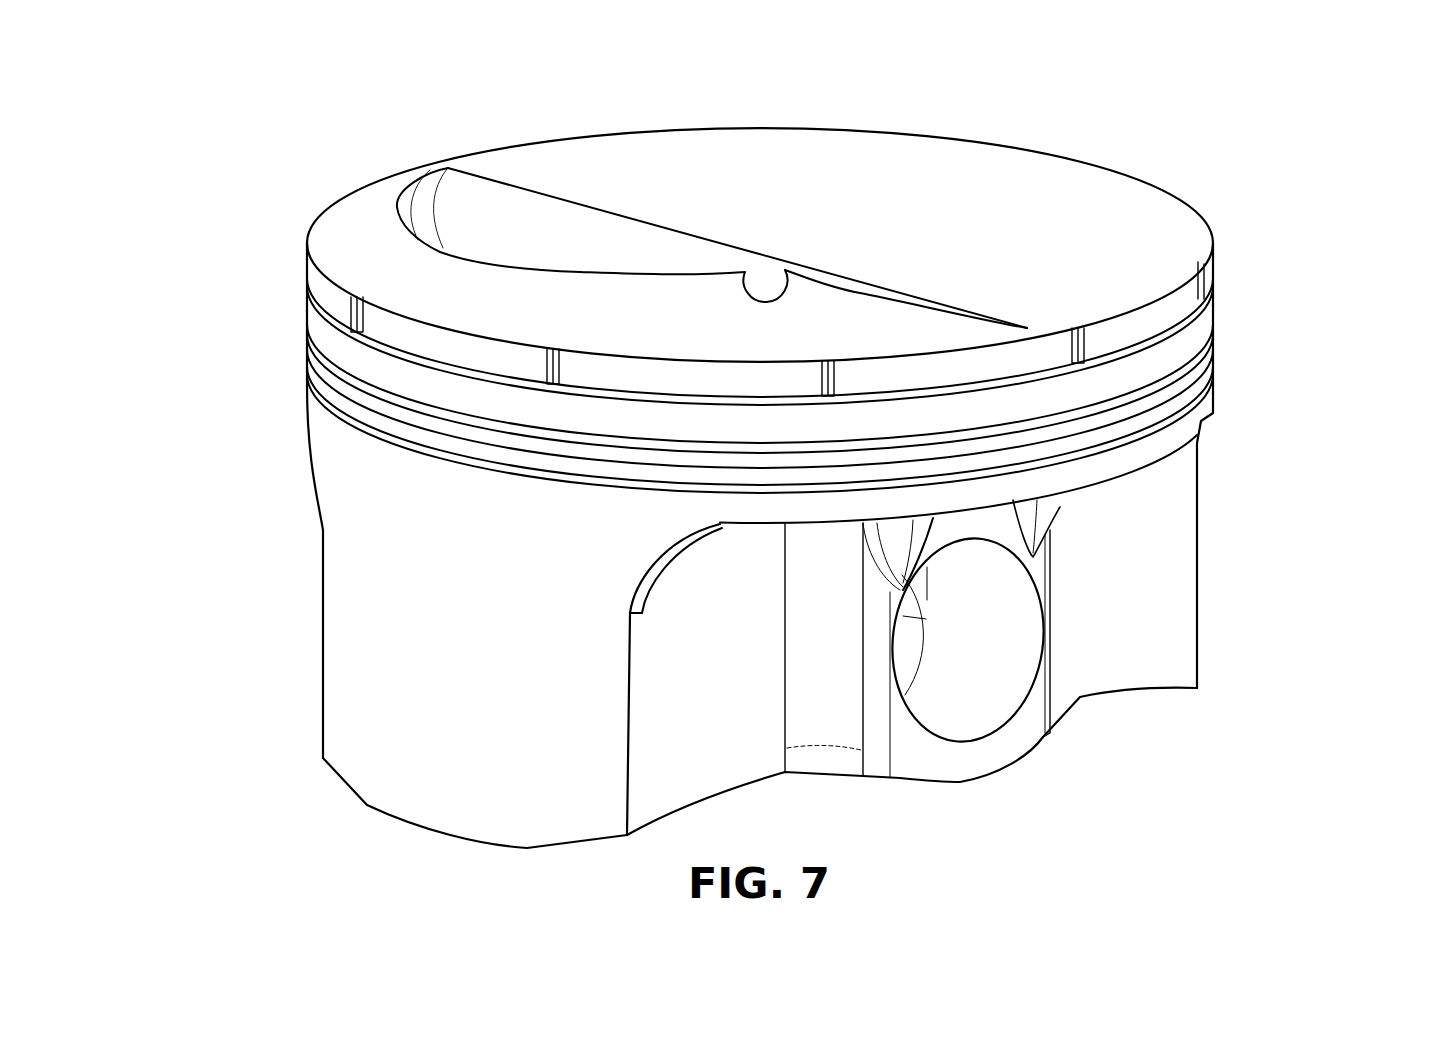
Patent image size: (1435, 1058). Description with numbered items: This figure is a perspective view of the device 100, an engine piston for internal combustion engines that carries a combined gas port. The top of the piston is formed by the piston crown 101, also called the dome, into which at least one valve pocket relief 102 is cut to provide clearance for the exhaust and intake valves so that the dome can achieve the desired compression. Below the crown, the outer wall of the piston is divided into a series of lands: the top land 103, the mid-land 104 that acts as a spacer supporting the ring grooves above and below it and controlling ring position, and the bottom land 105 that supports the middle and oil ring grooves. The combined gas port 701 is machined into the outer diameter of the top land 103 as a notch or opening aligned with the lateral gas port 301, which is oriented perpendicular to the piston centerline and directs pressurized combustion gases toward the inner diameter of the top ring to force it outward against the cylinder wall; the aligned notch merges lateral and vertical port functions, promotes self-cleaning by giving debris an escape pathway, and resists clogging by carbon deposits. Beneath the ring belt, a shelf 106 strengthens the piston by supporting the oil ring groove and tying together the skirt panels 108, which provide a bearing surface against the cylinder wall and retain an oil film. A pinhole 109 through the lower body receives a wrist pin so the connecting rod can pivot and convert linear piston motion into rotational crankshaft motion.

The device 100 is at (920, 225).
The piston crown 101 is at (775, 200).
The valve pocket relief 102 is at (460, 216).
The top land 103 is at (322, 286).
The mid-land 104 is at (320, 342).
The bottom land 105 is at (306, 378).
The shelf 106 is at (1208, 435).
The skirt panel 108 is at (385, 634).
The pinhole 109 is at (986, 664).
The lateral gas port 301 is at (1085, 380).
The combined gas port 701 is at (831, 348).